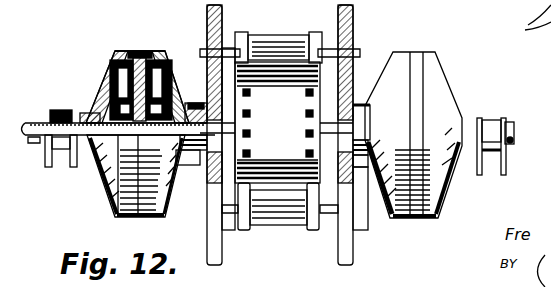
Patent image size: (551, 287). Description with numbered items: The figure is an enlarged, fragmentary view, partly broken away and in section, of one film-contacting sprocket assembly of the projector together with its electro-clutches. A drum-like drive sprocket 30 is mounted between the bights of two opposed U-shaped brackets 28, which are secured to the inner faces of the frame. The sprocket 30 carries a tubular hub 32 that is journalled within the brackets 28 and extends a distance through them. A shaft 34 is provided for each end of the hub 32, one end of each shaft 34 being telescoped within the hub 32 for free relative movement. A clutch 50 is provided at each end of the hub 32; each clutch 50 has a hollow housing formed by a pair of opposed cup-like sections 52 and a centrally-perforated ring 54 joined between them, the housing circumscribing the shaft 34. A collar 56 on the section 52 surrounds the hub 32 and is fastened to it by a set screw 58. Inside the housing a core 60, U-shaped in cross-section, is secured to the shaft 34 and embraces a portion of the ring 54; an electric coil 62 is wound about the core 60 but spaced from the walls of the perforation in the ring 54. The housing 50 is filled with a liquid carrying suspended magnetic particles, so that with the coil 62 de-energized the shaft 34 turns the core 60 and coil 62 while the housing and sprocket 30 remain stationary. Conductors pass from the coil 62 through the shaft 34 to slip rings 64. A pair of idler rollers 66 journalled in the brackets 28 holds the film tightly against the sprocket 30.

The U-shaped bracket 28 is at (222, 27).
The drive sprocket 30 is at (287, 200).
The tubular hub 32 is at (356, 105).
The shaft 34 is at (36, 140).
The clutch 50 is at (269, 133).
The cup-like section 52 is at (108, 185).
The centrally-perforated ring 54 is at (170, 74).
The collar 56 is at (186, 170).
The set screw 58 is at (198, 100).
The core 60 is at (127, 51).
The electric coil 62 is at (117, 132).
The slip ring 64 is at (57, 112).
The idler roller 66 is at (280, 45).